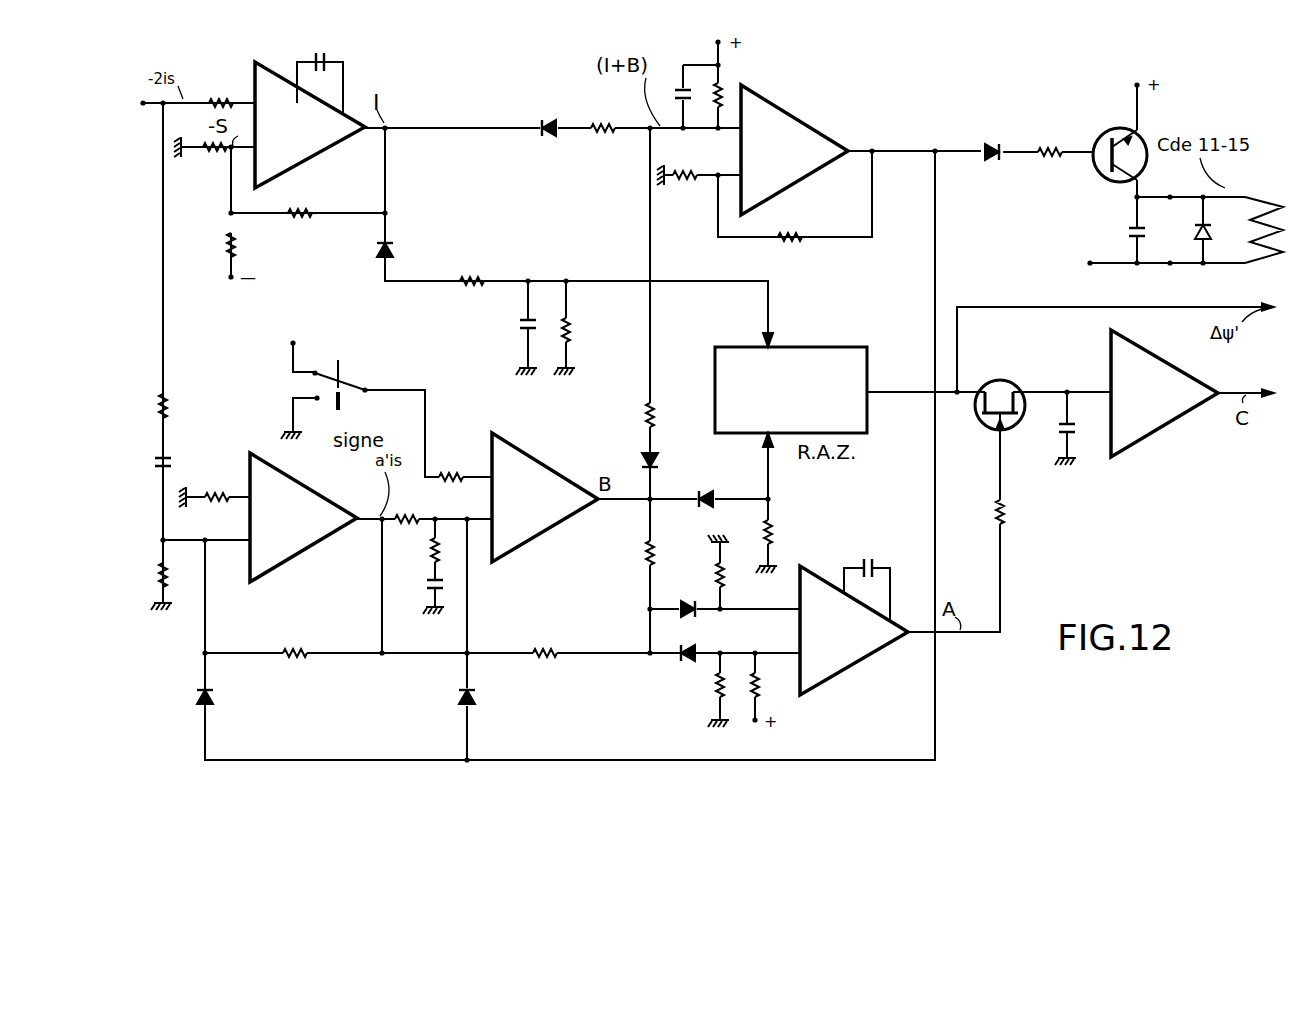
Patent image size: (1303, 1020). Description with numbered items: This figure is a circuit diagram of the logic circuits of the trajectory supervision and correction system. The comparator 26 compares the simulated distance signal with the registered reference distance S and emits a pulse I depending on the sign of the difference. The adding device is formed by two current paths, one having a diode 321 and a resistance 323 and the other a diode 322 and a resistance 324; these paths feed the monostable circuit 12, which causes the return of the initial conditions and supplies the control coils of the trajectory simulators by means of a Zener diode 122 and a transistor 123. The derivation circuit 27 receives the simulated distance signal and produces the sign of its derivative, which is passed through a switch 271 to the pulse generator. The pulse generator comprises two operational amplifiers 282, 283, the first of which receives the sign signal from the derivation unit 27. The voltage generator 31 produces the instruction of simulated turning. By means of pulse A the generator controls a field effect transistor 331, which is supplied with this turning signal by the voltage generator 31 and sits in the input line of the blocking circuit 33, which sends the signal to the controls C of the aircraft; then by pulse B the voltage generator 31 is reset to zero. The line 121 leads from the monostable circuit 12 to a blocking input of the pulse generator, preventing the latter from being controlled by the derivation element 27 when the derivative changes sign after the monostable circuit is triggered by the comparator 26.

The comparator 26 is at (310, 125).
The diode 321 is at (556, 122).
The resistance 323 is at (603, 122).
The monostable circuit 12 is at (794, 150).
The Zener diode 122 is at (978, 150).
The transistor 123 is at (1101, 140).
The switch 271 is at (325, 372).
The derivation circuit 27 is at (303, 517).
The operational amplifier 282 is at (545, 497).
The resistance 324 is at (668, 401).
The diode 322 is at (664, 452).
The voltage generator 31 is at (791, 390).
The field effect transistor 331 is at (1020, 372).
The blocking circuit 33 is at (1164, 393).
The operational amplifier 283 is at (854, 630).
The line 121 is at (847, 760).